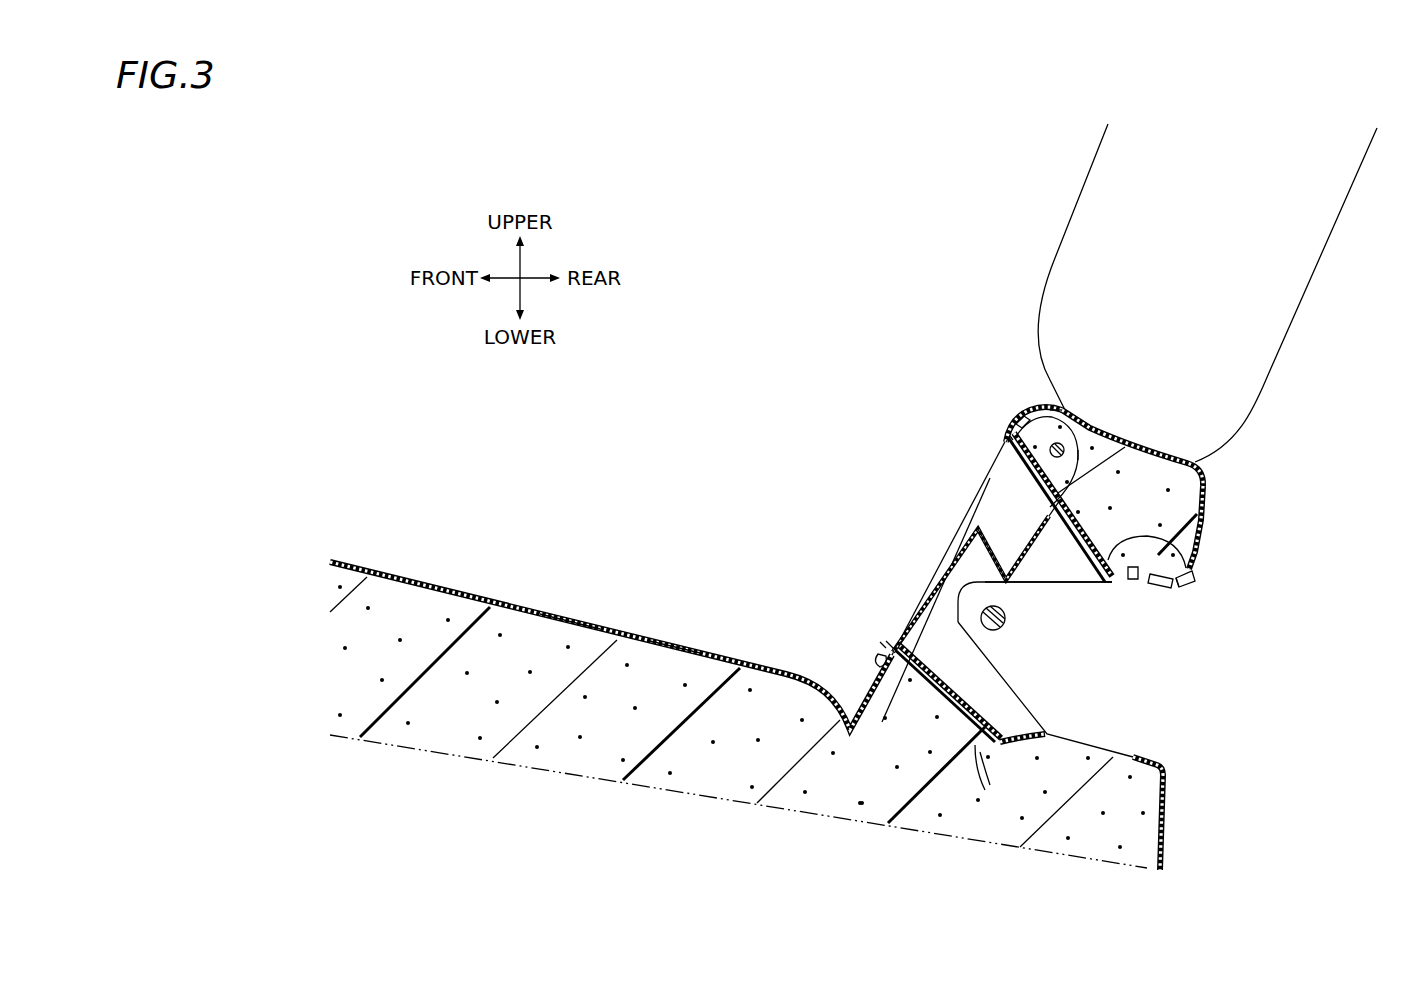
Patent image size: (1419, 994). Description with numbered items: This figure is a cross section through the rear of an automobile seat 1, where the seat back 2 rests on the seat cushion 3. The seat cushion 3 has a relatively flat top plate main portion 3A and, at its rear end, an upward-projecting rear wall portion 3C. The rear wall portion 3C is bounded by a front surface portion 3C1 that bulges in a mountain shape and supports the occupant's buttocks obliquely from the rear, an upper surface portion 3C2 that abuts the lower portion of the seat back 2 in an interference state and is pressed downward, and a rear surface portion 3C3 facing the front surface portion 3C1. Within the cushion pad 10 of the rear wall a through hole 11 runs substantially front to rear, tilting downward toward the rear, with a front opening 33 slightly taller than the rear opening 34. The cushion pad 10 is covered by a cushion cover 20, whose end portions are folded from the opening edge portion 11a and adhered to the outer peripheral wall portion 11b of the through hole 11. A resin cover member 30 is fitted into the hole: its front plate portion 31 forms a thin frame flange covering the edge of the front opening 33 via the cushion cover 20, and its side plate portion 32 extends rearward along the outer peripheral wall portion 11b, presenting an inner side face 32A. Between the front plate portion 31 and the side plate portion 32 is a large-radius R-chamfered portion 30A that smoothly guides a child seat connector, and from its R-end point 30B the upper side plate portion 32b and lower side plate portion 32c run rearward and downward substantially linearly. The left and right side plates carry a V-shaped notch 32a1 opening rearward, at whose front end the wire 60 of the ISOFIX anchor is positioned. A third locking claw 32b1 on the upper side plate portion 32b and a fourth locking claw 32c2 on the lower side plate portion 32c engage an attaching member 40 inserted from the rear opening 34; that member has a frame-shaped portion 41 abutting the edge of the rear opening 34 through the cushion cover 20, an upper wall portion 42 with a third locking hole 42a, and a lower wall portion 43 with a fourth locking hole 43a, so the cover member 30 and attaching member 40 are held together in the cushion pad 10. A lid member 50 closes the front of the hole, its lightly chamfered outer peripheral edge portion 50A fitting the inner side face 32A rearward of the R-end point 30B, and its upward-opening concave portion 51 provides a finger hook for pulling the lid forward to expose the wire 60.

The automobile seat 1 is at (846, 219).
The seat back 2 is at (1070, 201).
The seat cushion 3 is at (455, 582).
The top plate main portion 3A is at (675, 646).
The rear wall portion 3C is at (1146, 446).
The front surface portion 3C1 is at (1043, 420).
The upper surface portion 3C2 is at (1157, 444).
The rear surface portion 3C3 is at (1205, 497).
The cushion pad 10 is at (447, 722).
The through hole 11 is at (1075, 737).
The opening edge portion 11a is at (1019, 421).
The outer peripheral wall portion 11b is at (1073, 470).
The cushion cover 20 is at (563, 608).
The cover member 30 is at (1012, 456).
The R-chamfered portion 30A is at (1006, 440).
The R-end point 30B is at (1010, 444).
The front plate portion 31 is at (1010, 430).
The side plate portion 32 is at (990, 642).
The inner side face 32A is at (1042, 495).
The V-shaped notch 32a1 is at (1063, 585).
The upper side plate portion 32b is at (1040, 490).
The third locking claw 32b1 is at (1117, 545).
The lower side plate portion 32c is at (930, 655).
The fourth locking claw 32c2 is at (977, 743).
The front opening 33 is at (1055, 411).
The rear opening 34 is at (1155, 760).
The attaching member 40 is at (1180, 586).
The frame-shaped portion 41 is at (1192, 580).
The upper wall portion 42 is at (1125, 590).
The third locking hole 42a is at (1196, 540).
The lower wall portion 43 is at (933, 695).
The fourth locking hole 43a is at (975, 745).
The lid member 50 is at (953, 556).
The outer peripheral edge portion 50A is at (1067, 457).
The concave portion 51 is at (1030, 552).
The wire 60 is at (1000, 627).